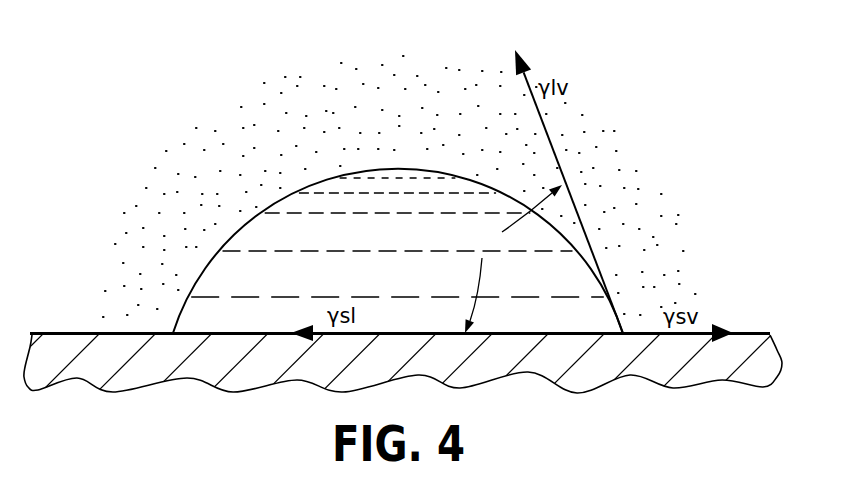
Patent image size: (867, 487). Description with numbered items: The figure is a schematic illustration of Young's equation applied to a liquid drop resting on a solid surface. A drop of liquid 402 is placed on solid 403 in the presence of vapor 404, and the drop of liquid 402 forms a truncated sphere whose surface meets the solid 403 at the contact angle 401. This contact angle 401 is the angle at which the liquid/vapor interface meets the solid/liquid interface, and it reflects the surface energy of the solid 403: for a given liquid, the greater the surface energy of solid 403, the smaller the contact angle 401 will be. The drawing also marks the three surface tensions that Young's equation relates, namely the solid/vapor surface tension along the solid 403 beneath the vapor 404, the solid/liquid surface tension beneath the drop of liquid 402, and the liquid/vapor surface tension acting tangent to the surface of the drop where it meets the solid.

The contact angle 401 is at (517, 237).
The drop of liquid 402 is at (367, 220).
The solid 403 is at (391, 404).
The vapor 404 is at (330, 97).